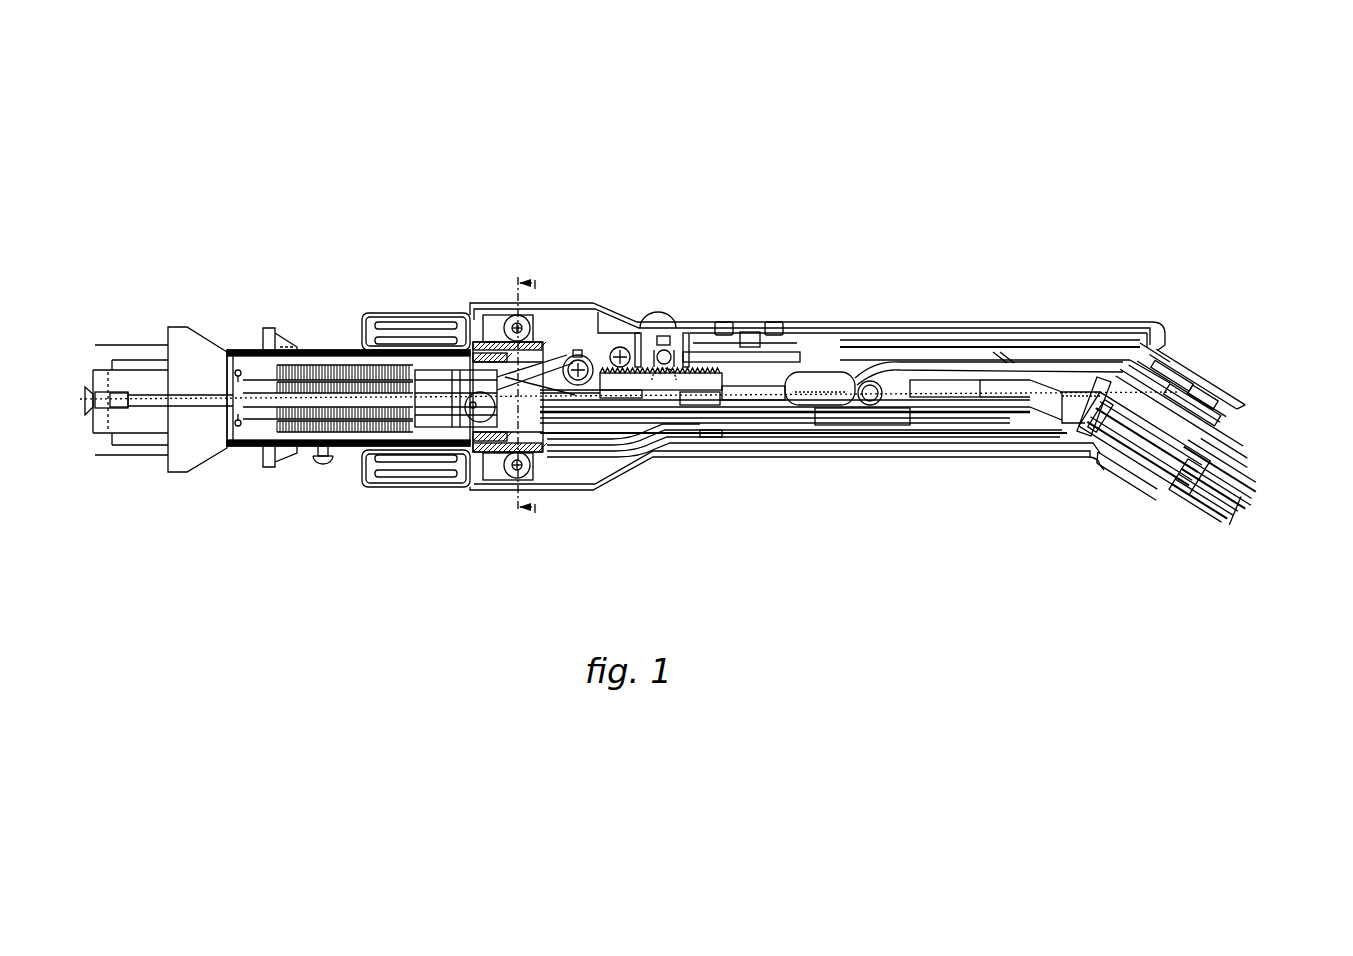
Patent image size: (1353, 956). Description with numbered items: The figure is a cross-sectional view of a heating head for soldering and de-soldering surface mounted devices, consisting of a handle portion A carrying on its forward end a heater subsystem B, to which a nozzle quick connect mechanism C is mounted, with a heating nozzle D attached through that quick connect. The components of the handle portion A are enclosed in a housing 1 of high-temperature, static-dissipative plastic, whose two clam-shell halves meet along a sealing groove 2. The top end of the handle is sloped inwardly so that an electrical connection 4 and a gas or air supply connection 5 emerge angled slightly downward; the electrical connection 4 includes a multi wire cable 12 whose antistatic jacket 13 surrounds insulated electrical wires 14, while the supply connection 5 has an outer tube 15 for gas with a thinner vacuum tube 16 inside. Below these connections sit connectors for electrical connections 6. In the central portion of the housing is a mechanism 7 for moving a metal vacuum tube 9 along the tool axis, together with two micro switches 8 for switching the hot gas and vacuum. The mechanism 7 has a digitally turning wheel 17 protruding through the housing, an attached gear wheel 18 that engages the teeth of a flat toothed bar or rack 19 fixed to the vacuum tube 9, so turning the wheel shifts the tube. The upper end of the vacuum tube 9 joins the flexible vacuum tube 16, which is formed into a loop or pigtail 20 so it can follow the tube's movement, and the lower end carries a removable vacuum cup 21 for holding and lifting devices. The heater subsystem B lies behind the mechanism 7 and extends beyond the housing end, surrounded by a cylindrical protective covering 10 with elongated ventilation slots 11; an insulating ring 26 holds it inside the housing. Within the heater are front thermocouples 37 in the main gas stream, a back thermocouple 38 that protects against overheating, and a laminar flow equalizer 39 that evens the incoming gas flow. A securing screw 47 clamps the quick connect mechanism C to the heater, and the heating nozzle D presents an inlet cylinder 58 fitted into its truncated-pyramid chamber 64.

The housing 1 is at (1009, 319).
The groove 2 is at (1087, 335).
The electrical connection 4 is at (1227, 458).
The gas or air supply connection 5 is at (1249, 403).
The connectors for electrical connections 6 is at (957, 389).
The mechanism for moving the vacuum tube 7 is at (678, 401).
The micro switches 8 is at (720, 327).
The metal vacuum tube 9 is at (554, 312).
The cylindrical protective shroud or covering 10 is at (387, 307).
The elongated slots or ventilation holes 11 is at (418, 342).
The multi wire cable 12 is at (1128, 437).
The antistatic jacket 13 is at (1190, 478).
The insulated electrical wires 14 is at (1212, 500).
The outer tube 15 is at (1188, 371).
The vacuum tube 16 is at (1208, 412).
The digitally turning wheel 17 is at (657, 322).
The gear wheel 18 is at (670, 353).
The flat toothed bar or rack 19 is at (698, 348).
The loop or pigtail 20 is at (831, 366).
The vacuum cup 21 is at (113, 415).
The insulating ring 26 is at (537, 449).
The front thermocouples 37 is at (240, 442).
The back thermocouple 38 is at (477, 452).
The laminar flow equalizer 39 is at (427, 418).
The securing screw 47 is at (322, 466).
The cylinder or inlet ring 58 is at (121, 352).
The chamber 64 is at (208, 345).
The handle portion A is at (543, 152).
The heater subsystem B is at (356, 337).
The nozzle quick connect mechanism C is at (268, 313).
The heating nozzle D is at (178, 300).